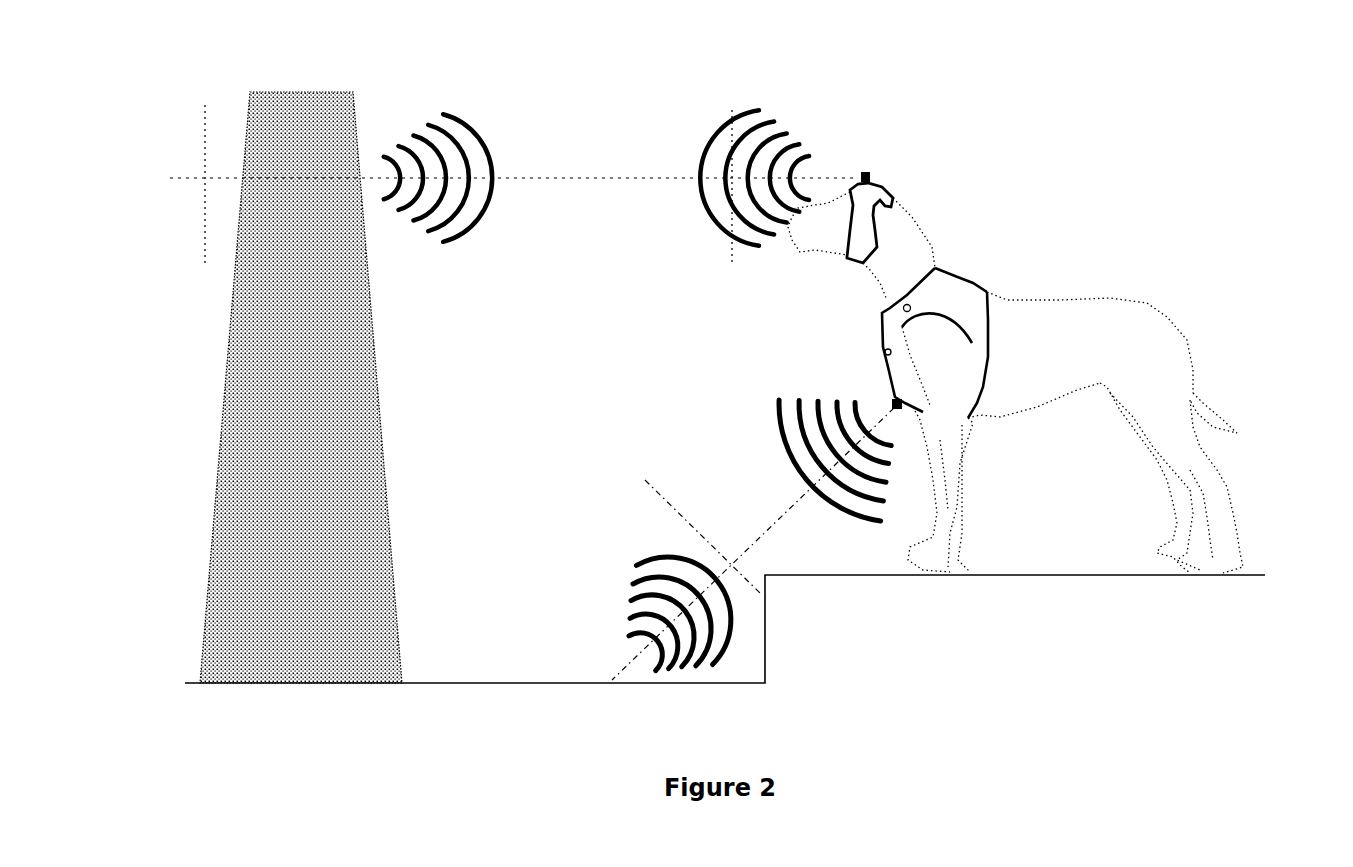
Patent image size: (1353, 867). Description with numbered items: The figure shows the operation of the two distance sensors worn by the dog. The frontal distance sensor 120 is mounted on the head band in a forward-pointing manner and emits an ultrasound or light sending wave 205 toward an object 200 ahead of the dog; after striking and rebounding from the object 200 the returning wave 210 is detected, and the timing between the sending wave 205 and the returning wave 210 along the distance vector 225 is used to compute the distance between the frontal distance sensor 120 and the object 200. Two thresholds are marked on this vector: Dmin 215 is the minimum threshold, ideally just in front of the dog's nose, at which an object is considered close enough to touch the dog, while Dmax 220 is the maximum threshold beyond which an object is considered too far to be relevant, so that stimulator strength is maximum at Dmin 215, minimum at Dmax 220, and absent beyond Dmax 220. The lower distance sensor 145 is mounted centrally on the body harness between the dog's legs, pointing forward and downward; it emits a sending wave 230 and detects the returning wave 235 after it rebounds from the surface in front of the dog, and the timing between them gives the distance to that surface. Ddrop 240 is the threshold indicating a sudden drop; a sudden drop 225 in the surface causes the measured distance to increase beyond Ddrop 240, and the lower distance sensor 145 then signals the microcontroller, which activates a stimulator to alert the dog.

The frontal distance sensor 120 is at (881, 163).
The lower distance sensor 145 is at (880, 392).
The object 200 is at (339, 83).
The sending wave 205 is at (808, 127).
The returning wave 210 is at (468, 103).
The Dmin 215 is at (736, 102).
The Dmax 220 is at (209, 97).
The distance vector 225 is at (583, 167).
The sending wave 230 is at (771, 411).
The returning wave 235 is at (628, 557).
The Ddrop 240 is at (645, 478).